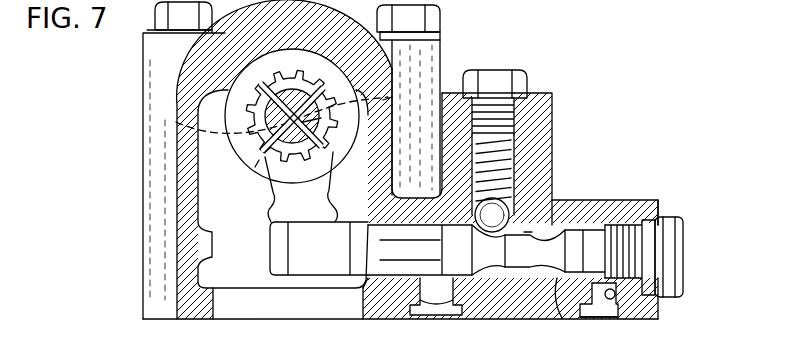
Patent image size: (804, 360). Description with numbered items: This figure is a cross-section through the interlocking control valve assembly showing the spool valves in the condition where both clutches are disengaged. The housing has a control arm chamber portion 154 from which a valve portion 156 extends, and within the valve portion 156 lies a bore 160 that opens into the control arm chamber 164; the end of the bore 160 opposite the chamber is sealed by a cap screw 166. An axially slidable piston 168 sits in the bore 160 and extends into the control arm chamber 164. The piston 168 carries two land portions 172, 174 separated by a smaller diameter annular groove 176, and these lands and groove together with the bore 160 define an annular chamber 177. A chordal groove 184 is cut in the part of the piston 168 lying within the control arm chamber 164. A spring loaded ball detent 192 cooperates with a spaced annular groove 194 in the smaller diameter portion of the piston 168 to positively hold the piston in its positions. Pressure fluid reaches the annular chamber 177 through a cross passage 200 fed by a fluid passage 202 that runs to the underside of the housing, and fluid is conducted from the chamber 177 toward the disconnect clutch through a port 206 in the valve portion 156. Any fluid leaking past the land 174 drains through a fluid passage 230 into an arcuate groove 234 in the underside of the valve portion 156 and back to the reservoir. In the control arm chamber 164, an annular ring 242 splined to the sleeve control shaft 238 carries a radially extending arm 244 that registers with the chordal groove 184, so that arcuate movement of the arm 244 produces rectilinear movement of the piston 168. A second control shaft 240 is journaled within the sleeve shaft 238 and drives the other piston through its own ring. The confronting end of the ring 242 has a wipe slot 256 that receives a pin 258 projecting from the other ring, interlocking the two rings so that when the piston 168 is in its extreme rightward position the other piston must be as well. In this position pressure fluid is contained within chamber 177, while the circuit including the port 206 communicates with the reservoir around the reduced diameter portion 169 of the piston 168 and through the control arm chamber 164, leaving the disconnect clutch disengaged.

The control arm chamber portion 154 is at (222, 50).
The valve portion 156 is at (645, 202).
The bore 160 is at (560, 280).
The control arm chamber 164 is at (200, 207).
The cap screw 166 is at (672, 255).
The piston 168 is at (585, 236).
The reduced diameter portion 169 is at (367, 305).
The land portion 172 is at (445, 248).
The land portion 174 is at (614, 228).
The annular groove 176 is at (550, 210).
The annular chamber 177 is at (528, 232).
The chordal groove 184 is at (268, 263).
The spring loaded ball detent 192 is at (408, 100).
The annular groove 194 is at (487, 272).
The cross passage 200 is at (437, 186).
The fluid passage 202 is at (497, 300).
The port 206 is at (424, 307).
The fluid passage 230 is at (618, 298).
The arcuate groove 234 is at (613, 323).
The sleeve control shaft 238 is at (295, 102).
The control shaft 240 is at (321, 118).
The annular ring 242 is at (255, 167).
The radially extending arm 244 is at (279, 200).
The wipe slot 256 is at (386, 106).
The pin 258 is at (186, 122).